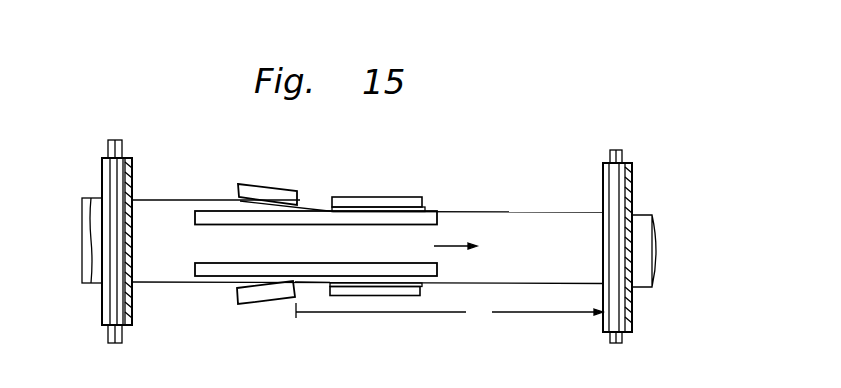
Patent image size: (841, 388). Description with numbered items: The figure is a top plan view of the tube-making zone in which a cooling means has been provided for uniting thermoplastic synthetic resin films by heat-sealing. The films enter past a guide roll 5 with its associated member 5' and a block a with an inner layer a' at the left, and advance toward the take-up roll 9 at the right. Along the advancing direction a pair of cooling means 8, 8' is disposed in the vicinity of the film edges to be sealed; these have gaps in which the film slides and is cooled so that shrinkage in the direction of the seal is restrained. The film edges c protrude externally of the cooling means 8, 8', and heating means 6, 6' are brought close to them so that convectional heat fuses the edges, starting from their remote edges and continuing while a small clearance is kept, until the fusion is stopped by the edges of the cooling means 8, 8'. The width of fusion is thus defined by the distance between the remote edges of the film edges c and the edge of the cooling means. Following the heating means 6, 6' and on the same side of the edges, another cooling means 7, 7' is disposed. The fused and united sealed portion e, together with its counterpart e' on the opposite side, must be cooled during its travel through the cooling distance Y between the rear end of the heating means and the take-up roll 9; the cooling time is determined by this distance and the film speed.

The guide roll 5 is at (134, 241).
The flange inner plate 5' is at (84, 238).
The end block a is at (76, 240).
The end block inner layer a' is at (71, 240).
The cooling means 8 is at (316, 191).
The cooling means 8' is at (316, 302).
The heating means 6 is at (267, 181).
The heating means 6' is at (266, 312).
The sealed portion e is at (292, 191).
The lower film e' is at (312, 297).
The cooling means 7 is at (378, 192).
The cooling means 7' is at (376, 315).
The take-up roll 9 is at (613, 193).
The film edges c is at (203, 280).
The cooling distance Y is at (449, 312).